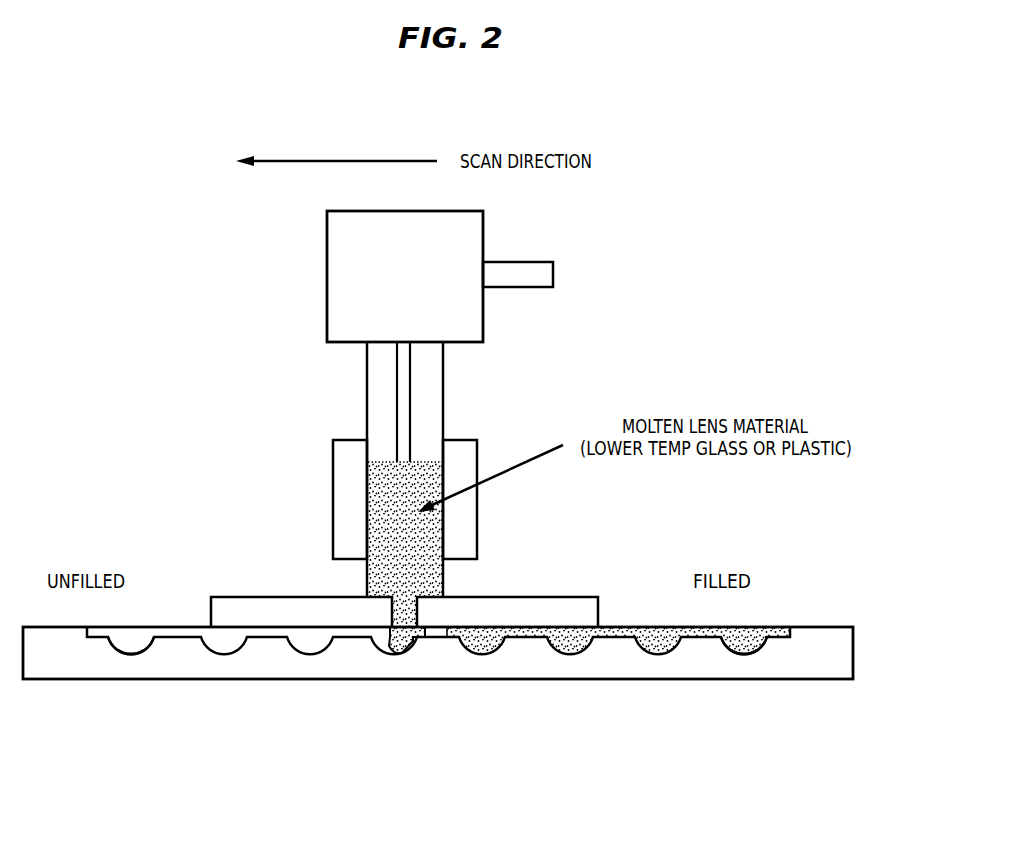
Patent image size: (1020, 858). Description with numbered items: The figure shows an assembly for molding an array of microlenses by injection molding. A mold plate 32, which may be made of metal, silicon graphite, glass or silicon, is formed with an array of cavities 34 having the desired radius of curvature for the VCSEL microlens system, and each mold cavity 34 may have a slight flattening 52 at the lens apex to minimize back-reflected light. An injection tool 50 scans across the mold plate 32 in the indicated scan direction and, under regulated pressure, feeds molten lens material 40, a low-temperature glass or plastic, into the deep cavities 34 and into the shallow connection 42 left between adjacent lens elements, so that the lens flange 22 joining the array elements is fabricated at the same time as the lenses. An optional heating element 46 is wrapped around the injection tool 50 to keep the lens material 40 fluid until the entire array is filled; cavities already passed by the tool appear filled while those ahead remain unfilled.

The lens flange 22 is at (752, 627).
The mold plate 32 is at (815, 620).
The cavity 34 is at (112, 645).
The lens material 40 is at (622, 637).
The connection 42 is at (154, 627).
The heating element 46 is at (477, 532).
The injection tool 50 is at (225, 314).
The flattening 52 is at (127, 655).